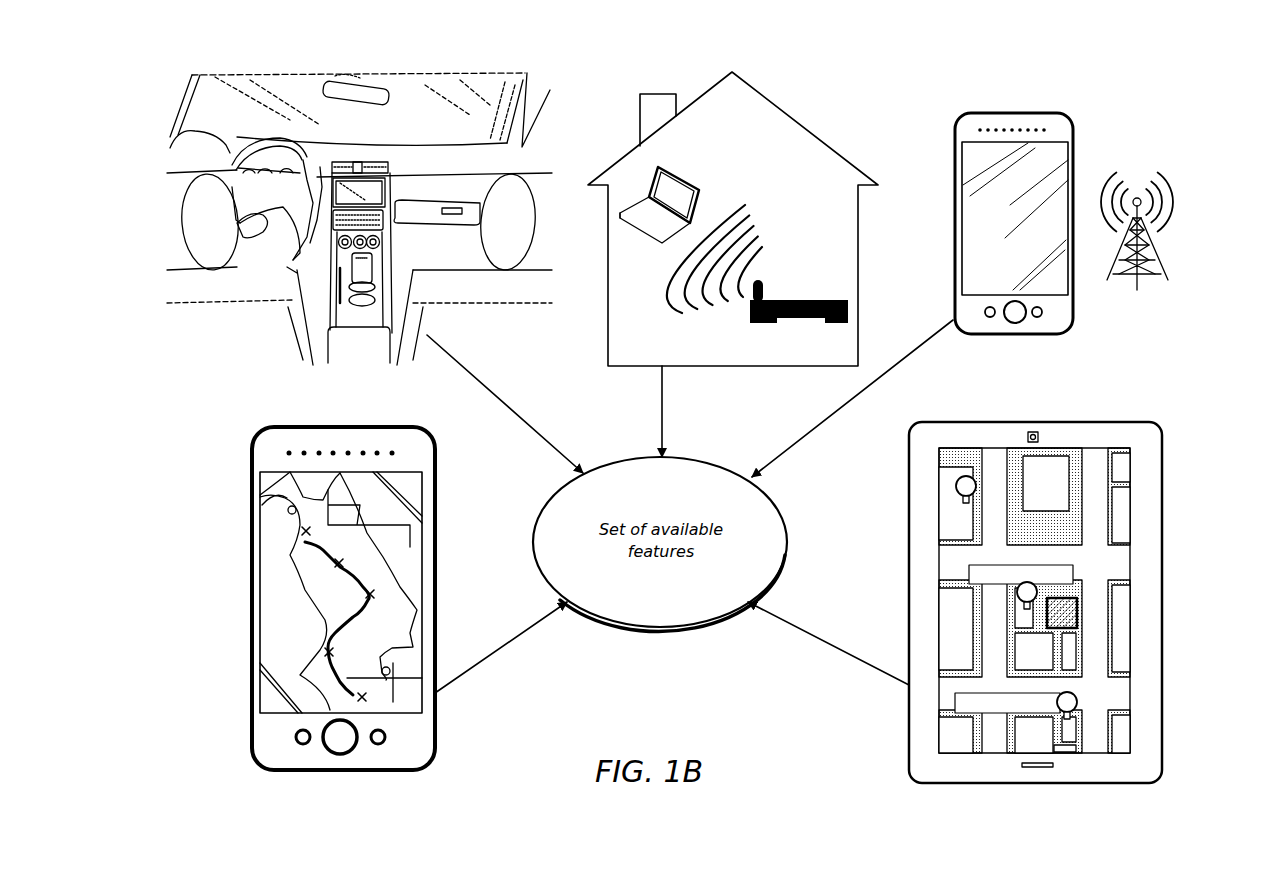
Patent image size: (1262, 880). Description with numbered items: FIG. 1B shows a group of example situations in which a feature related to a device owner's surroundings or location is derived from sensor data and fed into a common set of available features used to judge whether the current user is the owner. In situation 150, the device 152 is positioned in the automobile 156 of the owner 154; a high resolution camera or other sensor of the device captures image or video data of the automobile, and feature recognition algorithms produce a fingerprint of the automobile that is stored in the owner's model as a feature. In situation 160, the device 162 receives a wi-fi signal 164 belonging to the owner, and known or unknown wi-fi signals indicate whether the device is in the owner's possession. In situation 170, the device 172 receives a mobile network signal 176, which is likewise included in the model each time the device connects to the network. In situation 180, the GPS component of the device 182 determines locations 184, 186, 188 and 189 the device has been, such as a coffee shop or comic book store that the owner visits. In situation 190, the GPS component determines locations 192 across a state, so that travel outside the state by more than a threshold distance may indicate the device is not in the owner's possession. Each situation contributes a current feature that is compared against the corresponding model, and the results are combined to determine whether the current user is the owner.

The situation 150 is at (571, 118).
The device 152 is at (373, 271).
The owner 154 is at (197, 137).
The automobile 156 is at (403, 158).
The situation 160 is at (832, 125).
The device 162 is at (697, 180).
The wi-fi signal 164 is at (745, 202).
The situation 170 is at (1160, 145).
The device 172 is at (1063, 113).
The mobile network signal 176 is at (1173, 215).
The situation 180 is at (1178, 442).
The device 182 is at (1062, 423).
The location 184 is at (1077, 702).
The location 186 is at (1017, 588).
The location 188 is at (963, 477).
The location 189 is at (1080, 607).
The situation 190 is at (455, 475).
The locations 192 is at (330, 635).